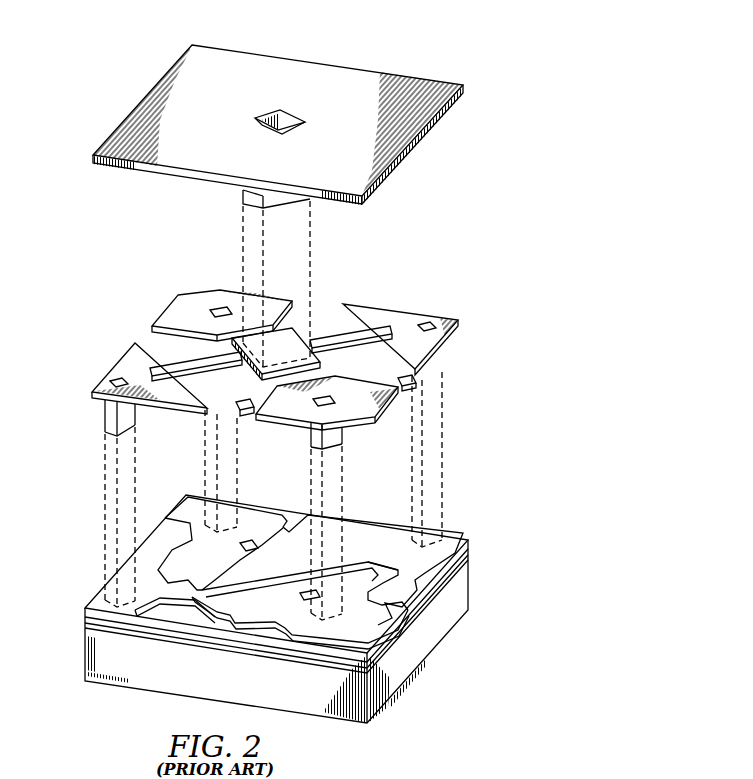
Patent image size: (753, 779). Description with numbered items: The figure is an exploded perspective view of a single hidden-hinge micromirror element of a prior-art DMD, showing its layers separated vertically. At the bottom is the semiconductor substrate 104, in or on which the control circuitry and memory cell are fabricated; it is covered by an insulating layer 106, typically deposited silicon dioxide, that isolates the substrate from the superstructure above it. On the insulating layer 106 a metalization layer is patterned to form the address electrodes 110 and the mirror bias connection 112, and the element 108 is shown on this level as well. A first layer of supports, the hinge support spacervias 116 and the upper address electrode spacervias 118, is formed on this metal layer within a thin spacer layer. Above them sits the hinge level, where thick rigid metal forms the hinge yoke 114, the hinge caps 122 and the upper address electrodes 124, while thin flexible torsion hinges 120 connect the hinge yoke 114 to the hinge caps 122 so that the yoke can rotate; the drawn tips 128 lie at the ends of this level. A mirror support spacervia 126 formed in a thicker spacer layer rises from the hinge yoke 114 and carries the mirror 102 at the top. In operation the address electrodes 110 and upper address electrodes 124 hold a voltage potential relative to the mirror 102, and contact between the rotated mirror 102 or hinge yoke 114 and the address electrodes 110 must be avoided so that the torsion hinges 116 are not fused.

The mirror 102 is at (313, 72).
The substrate 104 is at (408, 665).
The insulating layer 106 is at (84, 620).
The bias/reset electrode 108 is at (242, 546).
The address electrodes 110 is at (188, 530).
The mirror bias connection 112 is at (98, 603).
The hinge yoke 114 is at (322, 305).
The hinge support spacervias 116 is at (112, 398).
The upper address electrode spacervias 118 is at (338, 435).
The torsion hinges 120 is at (200, 370).
The hinge cap 122 is at (125, 365).
The upper address electrodes 124 is at (219, 296).
The mirror support spacervias 126 is at (284, 198).
The spring tip 128 is at (249, 418).